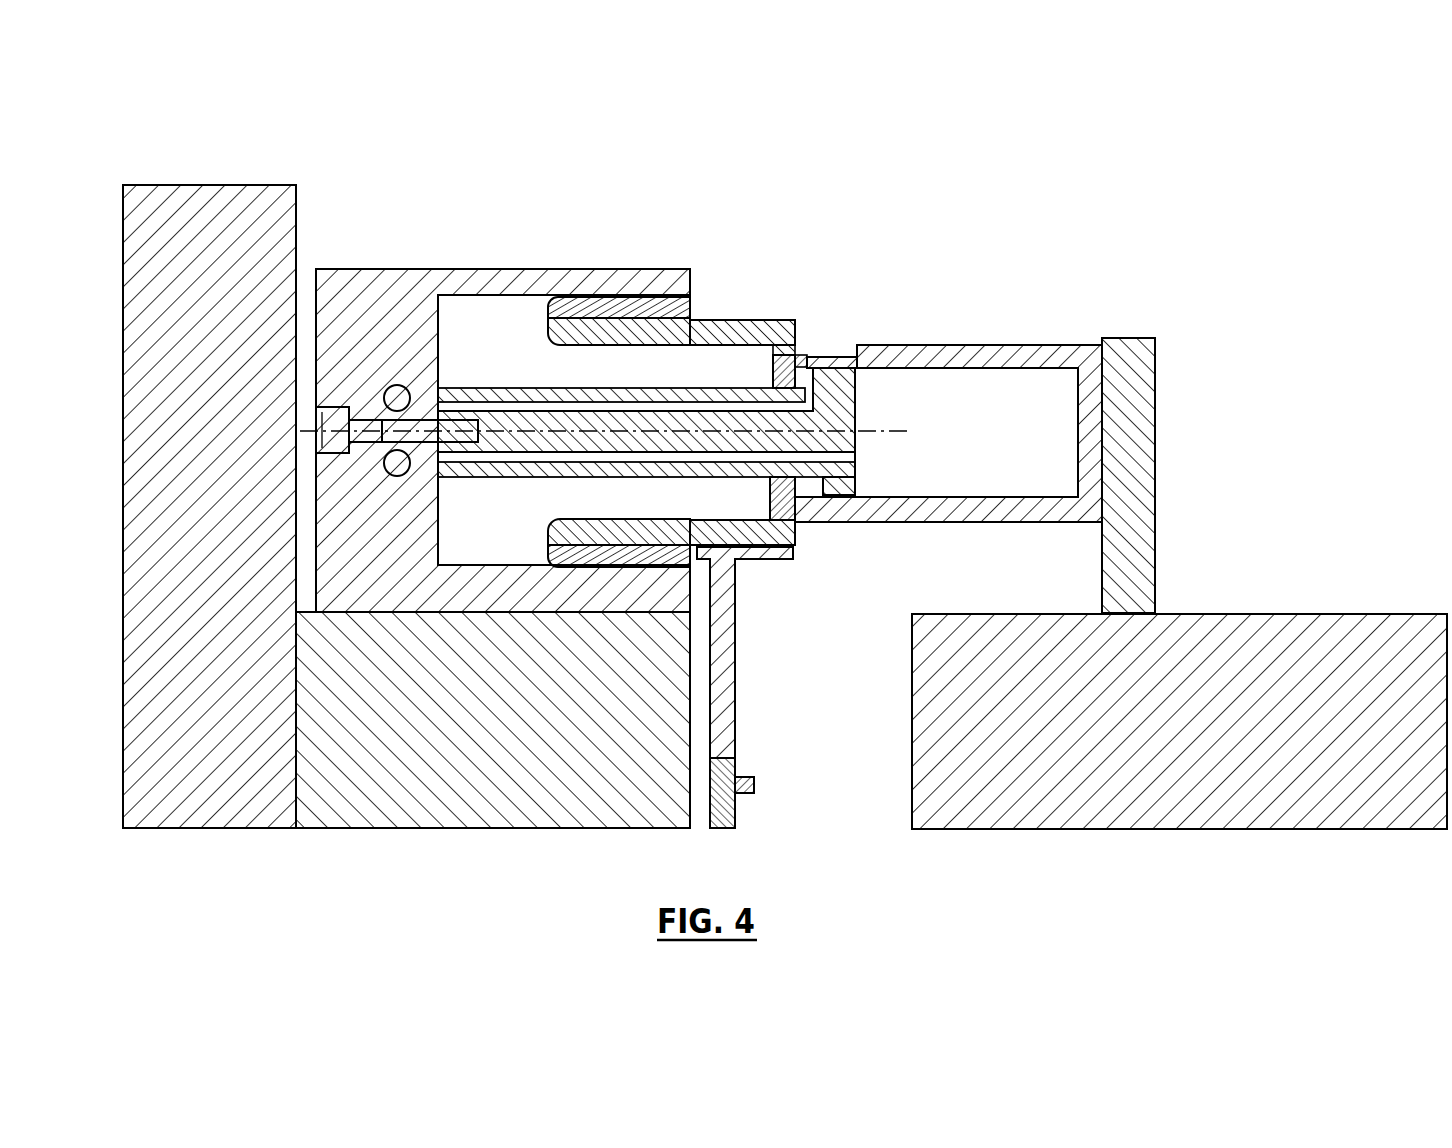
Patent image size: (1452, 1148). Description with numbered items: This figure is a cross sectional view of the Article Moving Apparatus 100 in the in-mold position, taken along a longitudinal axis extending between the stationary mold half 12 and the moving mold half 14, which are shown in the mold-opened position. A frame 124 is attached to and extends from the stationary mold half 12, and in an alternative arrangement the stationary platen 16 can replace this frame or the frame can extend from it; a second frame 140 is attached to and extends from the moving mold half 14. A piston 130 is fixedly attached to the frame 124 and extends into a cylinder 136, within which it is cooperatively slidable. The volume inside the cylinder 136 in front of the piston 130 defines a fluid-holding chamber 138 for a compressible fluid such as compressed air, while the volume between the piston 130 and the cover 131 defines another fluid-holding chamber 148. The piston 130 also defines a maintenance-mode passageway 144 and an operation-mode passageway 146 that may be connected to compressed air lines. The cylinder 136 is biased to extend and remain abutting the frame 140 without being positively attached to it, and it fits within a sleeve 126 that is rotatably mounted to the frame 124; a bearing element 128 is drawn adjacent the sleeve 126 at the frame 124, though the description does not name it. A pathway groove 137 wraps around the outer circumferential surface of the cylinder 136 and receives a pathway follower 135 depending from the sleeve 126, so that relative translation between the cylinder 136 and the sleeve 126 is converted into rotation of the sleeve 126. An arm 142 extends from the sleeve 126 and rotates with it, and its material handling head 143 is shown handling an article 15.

The stationary mold half 12 is at (400, 798).
The moving mold half 14 is at (1103, 795).
The article 15 is at (757, 788).
The stationary platen 16 is at (233, 815).
The Article Moving Apparatus (AMA) 100 is at (1058, 136).
The frame 124 is at (408, 287).
The sleeve 126 is at (667, 330).
The outer bearing race 128 is at (613, 307).
The piston 130 is at (708, 415).
The cover 131 is at (755, 367).
The pathway follower 135 is at (778, 352).
The cylinder 136 is at (1077, 348).
The pathway groove 137 is at (852, 348).
The fluid-holding chamber 138 is at (1013, 395).
The frame 140 is at (1133, 490).
The arm 142 is at (737, 710).
The material handling head 143 is at (737, 798).
The maintenance-mode passageway 144 is at (397, 398).
The operation-mode passageway 146 is at (395, 458).
The fluid-holding chamber 148 is at (812, 360).